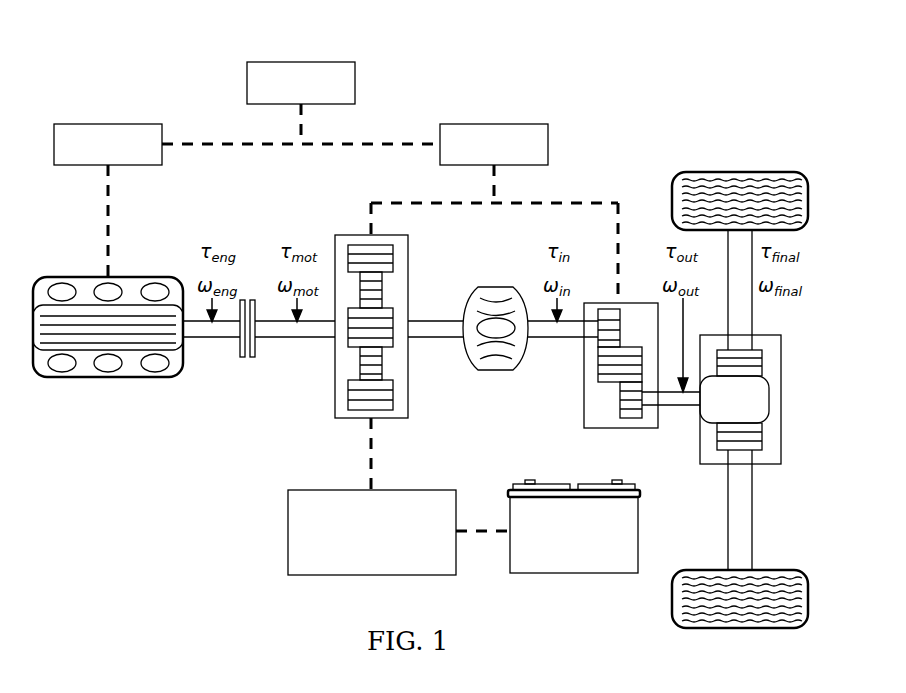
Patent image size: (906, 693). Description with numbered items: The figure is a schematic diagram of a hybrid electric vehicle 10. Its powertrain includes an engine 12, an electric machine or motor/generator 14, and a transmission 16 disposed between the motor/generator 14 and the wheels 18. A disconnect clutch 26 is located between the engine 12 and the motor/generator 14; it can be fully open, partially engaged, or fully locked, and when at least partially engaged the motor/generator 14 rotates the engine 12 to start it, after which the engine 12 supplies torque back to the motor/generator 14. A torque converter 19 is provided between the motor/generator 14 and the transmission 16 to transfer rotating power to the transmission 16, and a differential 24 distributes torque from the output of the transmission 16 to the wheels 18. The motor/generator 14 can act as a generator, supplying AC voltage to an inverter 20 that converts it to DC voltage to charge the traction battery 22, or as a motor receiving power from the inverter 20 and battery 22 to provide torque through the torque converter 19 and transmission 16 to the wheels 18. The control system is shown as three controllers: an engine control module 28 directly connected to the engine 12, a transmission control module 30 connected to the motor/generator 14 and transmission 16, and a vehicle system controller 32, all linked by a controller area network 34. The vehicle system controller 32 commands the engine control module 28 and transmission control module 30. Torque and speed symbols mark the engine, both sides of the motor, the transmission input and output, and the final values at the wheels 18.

The vehicle 10 is at (167, 507).
The engine 12 is at (108, 377).
The electric machine or motor/generator (M/G) 14 is at (400, 368).
The transmission 16 is at (590, 403).
The wheels 18 is at (757, 172).
The torque converter 19 is at (497, 287).
The inverter 20 is at (325, 490).
The traction battery 22 is at (520, 483).
The differential 24 is at (770, 398).
The disconnect clutch 26 is at (243, 357).
The engine control module (ECM) 28 is at (78, 124).
The transmission control module (TCM) 30 is at (475, 124).
The vehicle system controller (VSC) 32 is at (268, 62).
The controller area network (CAN) 34 is at (407, 140).